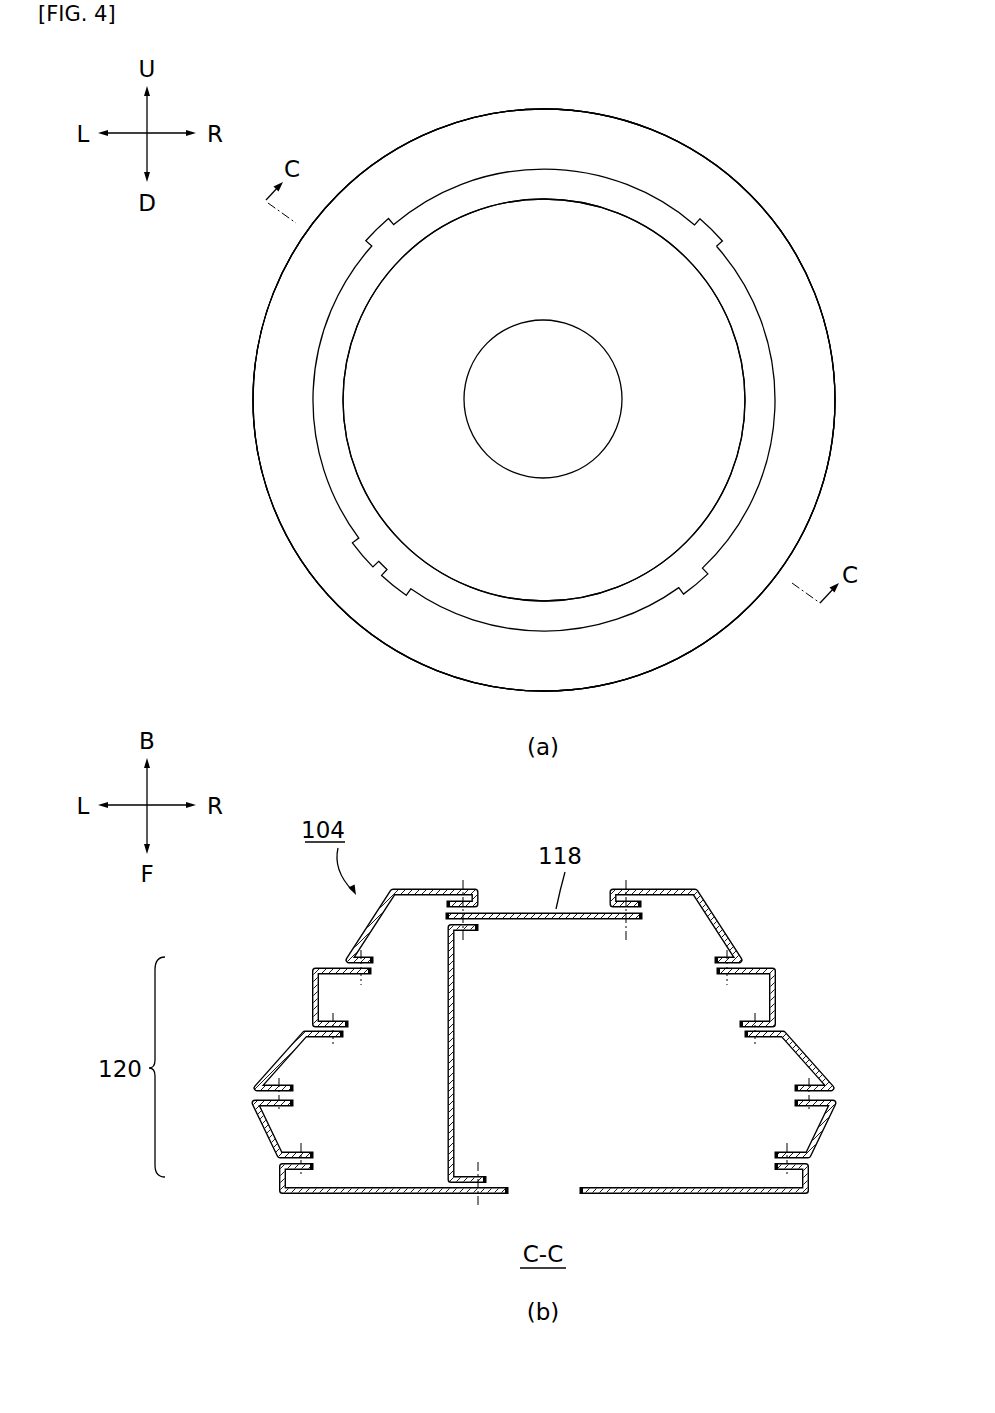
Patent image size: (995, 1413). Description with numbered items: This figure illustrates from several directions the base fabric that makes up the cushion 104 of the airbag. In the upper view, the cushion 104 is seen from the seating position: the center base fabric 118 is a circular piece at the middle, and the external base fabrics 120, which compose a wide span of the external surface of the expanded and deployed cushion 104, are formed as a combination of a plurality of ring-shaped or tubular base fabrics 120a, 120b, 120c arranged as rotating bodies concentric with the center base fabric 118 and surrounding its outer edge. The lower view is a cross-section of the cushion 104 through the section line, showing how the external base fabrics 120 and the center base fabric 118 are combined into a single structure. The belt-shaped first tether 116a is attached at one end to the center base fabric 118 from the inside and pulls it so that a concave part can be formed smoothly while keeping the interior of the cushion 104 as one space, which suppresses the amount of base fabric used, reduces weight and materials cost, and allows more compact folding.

The cushion 104 is at (376, 124).
The center base fabric 118 is at (596, 397).
The external base fabrics 120 is at (188, 486).
The base fabric 120a is at (353, 463).
The base fabric 120b is at (348, 507).
The base fabric 120c is at (328, 570).
The first tether 116a is at (457, 1048).